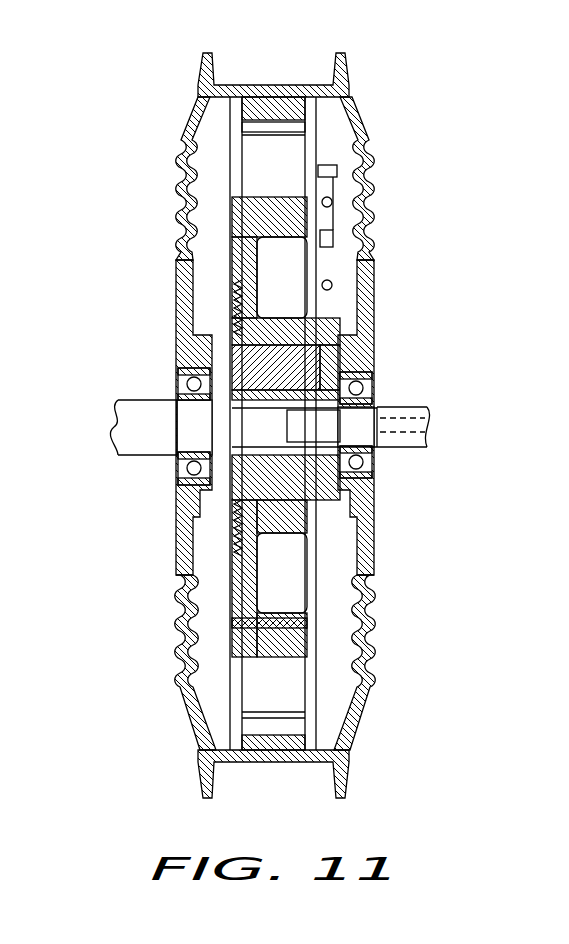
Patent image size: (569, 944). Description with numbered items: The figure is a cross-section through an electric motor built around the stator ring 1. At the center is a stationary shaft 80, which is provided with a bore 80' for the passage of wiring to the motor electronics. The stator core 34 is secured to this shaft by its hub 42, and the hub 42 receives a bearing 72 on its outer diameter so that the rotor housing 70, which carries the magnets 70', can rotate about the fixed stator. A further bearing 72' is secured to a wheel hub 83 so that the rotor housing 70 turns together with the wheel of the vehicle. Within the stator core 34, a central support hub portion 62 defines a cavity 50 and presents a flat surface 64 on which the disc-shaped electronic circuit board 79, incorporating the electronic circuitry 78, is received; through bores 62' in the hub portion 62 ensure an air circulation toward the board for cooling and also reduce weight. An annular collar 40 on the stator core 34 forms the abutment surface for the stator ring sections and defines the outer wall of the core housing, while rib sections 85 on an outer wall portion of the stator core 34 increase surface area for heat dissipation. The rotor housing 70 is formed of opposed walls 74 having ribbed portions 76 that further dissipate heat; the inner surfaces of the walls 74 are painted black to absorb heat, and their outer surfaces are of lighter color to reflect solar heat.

The stator ring 1 is at (355, 723).
The stator core 34 is at (230, 270).
The annular collar 40 is at (375, 232).
The hub 42 is at (377, 513).
The cavity 50 is at (333, 282).
The central support hub portion 62 is at (355, 265).
The through bores 62' is at (197, 481).
The flat surface 64 is at (355, 345).
The rotor housing 70 is at (258, 287).
The magnets 70' is at (314, 423).
The bearing 72 is at (408, 454).
The further bearing 72' is at (127, 426).
The opposed walls 74 is at (380, 580).
The ribbed portions 76 is at (363, 128).
The electronic circuitry 78 is at (333, 205).
The electronic circuit board 79 is at (334, 244).
The shaft 80 is at (396, 425).
The bore 80' is at (469, 468).
The wheel hub 83 is at (148, 408).
The rib sections 85 is at (238, 300).